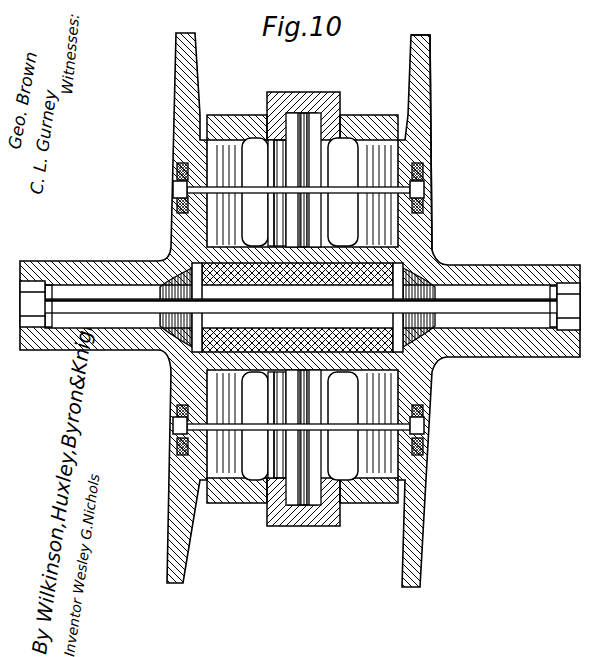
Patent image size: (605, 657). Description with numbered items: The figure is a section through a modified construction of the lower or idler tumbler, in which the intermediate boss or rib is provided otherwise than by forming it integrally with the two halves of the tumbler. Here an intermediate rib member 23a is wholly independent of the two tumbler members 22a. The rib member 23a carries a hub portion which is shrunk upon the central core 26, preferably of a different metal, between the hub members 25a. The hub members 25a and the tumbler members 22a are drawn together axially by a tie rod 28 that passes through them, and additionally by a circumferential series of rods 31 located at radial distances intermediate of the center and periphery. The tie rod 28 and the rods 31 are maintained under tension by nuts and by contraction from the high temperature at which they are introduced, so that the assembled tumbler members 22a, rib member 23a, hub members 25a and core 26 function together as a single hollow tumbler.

The tumbler members 22a is at (369, 117).
The intermediate rib member 23a is at (331, 96).
The hub members 25a is at (423, 222).
The core 26 is at (365, 253).
The tie rod 28 is at (512, 273).
The rods 31 is at (372, 183).